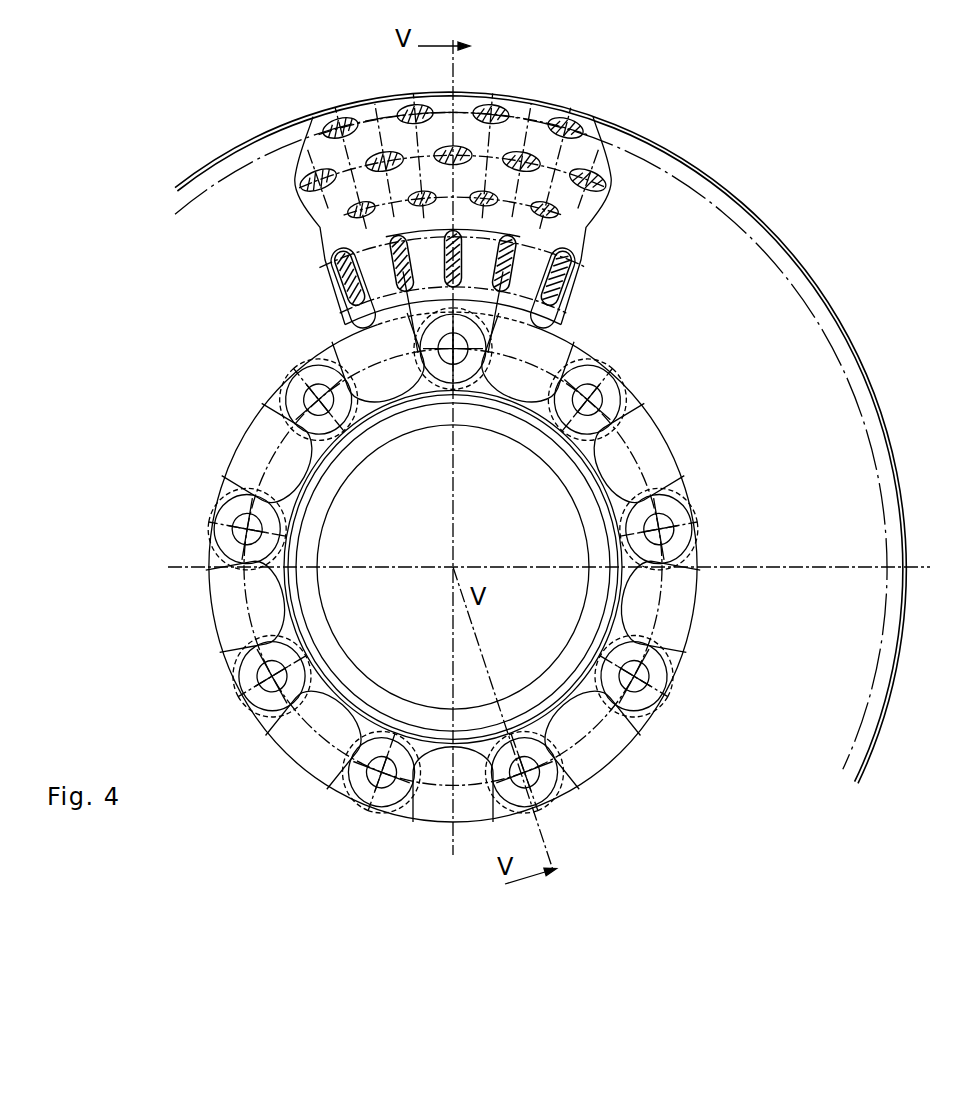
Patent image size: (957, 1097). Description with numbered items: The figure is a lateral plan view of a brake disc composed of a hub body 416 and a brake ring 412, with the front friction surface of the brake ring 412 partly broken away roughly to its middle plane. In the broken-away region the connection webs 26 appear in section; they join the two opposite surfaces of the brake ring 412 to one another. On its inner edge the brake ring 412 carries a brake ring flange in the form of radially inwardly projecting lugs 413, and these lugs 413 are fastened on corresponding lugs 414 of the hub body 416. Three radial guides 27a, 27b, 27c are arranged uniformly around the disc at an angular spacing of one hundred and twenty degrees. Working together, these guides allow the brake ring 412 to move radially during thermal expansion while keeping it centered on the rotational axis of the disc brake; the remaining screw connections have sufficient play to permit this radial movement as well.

The connection webs 26 is at (578, 120).
The brake ring 412 is at (708, 288).
The radially inwardly projecting lugs 413 is at (640, 397).
The lugs on the hub body 414 is at (570, 451).
The hub body 416 is at (577, 515).
The radial guide 27a is at (443, 378).
The radial guide 27b is at (285, 665).
The radial guide 27c is at (617, 700).